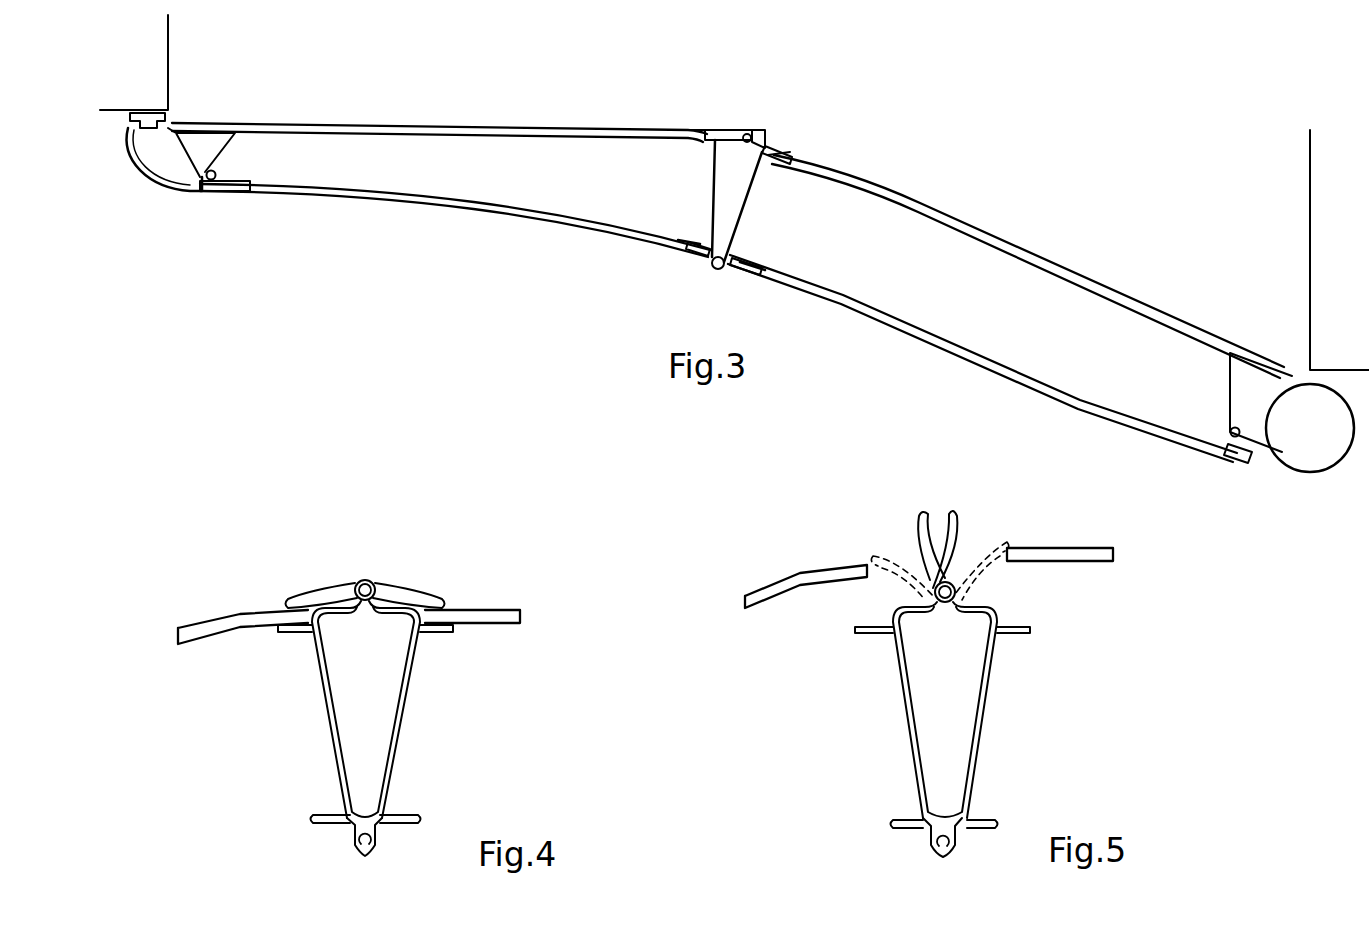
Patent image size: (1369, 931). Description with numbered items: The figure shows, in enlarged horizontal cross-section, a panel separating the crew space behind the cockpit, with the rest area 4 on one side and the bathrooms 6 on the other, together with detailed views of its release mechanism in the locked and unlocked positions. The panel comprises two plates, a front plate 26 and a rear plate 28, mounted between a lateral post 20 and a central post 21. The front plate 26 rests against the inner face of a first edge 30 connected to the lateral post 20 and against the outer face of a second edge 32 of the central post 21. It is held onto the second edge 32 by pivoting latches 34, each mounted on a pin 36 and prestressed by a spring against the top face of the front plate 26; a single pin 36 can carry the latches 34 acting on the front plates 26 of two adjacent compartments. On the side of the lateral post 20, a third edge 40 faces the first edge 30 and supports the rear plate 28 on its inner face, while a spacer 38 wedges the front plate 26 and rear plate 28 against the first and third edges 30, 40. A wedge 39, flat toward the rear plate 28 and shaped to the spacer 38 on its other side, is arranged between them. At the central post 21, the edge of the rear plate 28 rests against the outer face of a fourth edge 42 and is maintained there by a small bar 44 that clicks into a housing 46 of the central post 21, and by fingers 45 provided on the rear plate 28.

In FIG. 3, the rest area 4 is at (1335, 188).
In FIG. 3, the bathrooms 6 is at (150, 58).
In FIG. 3, the lateral post 20 is at (162, 170).
In FIG. 3, the central post 21 is at (722, 178).
In FIG. 4, the central post 21 is at (385, 698).
In FIG. 5, the central post 21 is at (955, 715).
In FIG. 3, the front plate 26 is at (430, 125).
In FIG. 4, the front plate 26 is at (215, 622).
In FIG. 5, the front plate 26 is at (788, 588).
In FIG. 3, the rear plate 28 is at (425, 190).
In FIG. 3, the first edge 30 is at (170, 123).
In FIG. 3, the second edge 32 is at (704, 138).
In FIG. 5, the second edge 32 is at (870, 632).
In FIG. 3, the pivoting latch 34 is at (778, 150).
In FIG. 4, the pivoting latch 34 is at (402, 598).
In FIG. 5, the pivoting latch 34 is at (950, 508).
In FIG. 4, the pin 36 is at (370, 596).
In FIG. 5, the pin 36 is at (948, 600).
In FIG. 3, the spacer 38 is at (220, 150).
In FIG. 3, the wedge 39 is at (246, 192).
In FIG. 3, the third edge 40 is at (212, 192).
In FIG. 3, the fourth edge 42 is at (714, 256).
In FIG. 4, the fourth edge 42 is at (398, 818).
In FIG. 5, the fourth edge 42 is at (985, 822).
In FIG. 3, the small bar 44 is at (714, 270).
In FIG. 3, the fingers 45 is at (688, 245).
In FIG. 4, the housing 46 is at (372, 840).
In FIG. 5, the housing 46 is at (950, 842).